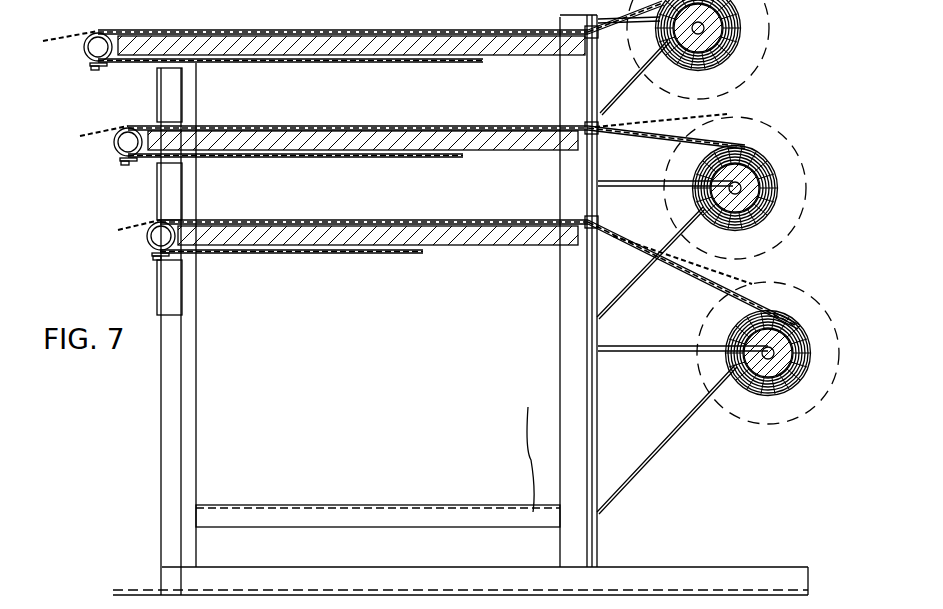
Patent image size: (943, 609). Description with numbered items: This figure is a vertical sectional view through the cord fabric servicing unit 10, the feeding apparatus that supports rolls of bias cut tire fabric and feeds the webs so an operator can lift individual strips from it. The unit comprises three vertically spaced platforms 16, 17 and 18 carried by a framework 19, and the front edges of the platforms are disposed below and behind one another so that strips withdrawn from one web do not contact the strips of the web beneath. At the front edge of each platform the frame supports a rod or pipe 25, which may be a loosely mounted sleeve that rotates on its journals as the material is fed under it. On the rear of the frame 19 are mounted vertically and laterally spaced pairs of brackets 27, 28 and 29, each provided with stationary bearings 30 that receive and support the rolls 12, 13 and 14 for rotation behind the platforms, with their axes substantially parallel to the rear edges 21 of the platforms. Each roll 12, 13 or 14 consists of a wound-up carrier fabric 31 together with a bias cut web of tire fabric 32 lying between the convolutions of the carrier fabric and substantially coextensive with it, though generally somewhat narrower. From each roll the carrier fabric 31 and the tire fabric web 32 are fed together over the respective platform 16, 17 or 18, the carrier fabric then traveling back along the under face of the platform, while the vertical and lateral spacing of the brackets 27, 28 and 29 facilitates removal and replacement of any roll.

The cord fabric servicing unit 10 is at (460, 467).
The roll 12 is at (738, 40).
The roll 13 is at (775, 182).
The roll 14 is at (797, 327).
The platform 16 is at (503, 48).
The platform 17 is at (493, 143).
The platform 18 is at (480, 236).
The framework 19 is at (177, 389).
The rear edge 21 is at (592, 50).
The rod or pipe 25 is at (88, 56).
The bracket 27 is at (624, 88).
The bracket 28 is at (632, 276).
The bracket 29 is at (647, 459).
The stationary bearing 30 is at (716, 47).
The carrier fabric 31 is at (350, 64).
The web of tire fabric 32 is at (64, 34).